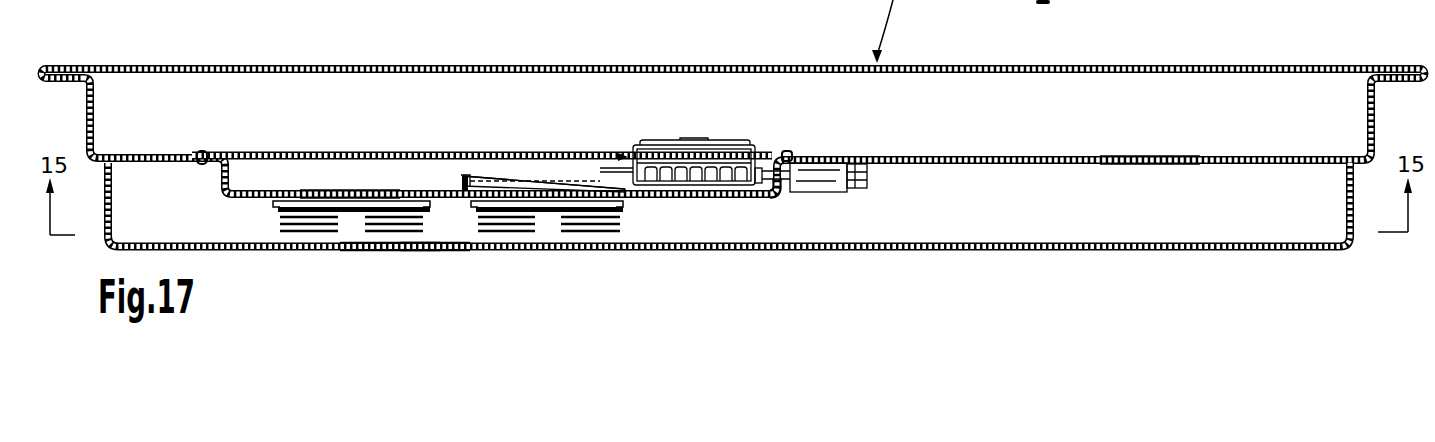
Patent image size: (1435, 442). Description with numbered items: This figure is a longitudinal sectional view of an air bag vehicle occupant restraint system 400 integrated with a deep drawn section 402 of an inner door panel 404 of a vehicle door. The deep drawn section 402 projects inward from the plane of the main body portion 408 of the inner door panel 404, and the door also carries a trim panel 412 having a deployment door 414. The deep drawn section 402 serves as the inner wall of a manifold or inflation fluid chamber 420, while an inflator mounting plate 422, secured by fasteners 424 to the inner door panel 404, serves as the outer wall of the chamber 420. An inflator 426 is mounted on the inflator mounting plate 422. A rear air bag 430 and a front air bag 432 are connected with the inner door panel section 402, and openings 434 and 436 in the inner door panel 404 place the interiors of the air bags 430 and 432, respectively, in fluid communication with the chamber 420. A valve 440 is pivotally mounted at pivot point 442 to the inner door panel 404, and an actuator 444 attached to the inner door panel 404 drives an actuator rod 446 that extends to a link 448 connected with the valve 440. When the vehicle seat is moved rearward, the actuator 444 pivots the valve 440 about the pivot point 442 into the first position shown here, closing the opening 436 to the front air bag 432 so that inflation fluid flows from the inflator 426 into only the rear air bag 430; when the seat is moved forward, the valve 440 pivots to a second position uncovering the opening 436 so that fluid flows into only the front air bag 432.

The air bag vehicle occupant restraint system 400 is at (430, 248).
The deep drawn section 402 is at (780, 210).
The inner door panel 404 is at (161, 140).
The main body portion 408 is at (1145, 164).
The trim panel 412 is at (1033, 260).
The deployment door 414 is at (390, 251).
The inflation fluid chamber 420 is at (483, 168).
The inflator mounting plate 422 is at (277, 140).
The fasteners 424 is at (202, 151).
The inflator 426 is at (714, 143).
The rear air bag 430 is at (283, 216).
The front air bag 432 is at (622, 230).
The opening 434 is at (348, 190).
The opening 436 is at (524, 192).
The valve 440 is at (575, 180).
The pivot point 442 is at (460, 181).
The actuator 444 is at (838, 188).
The actuator rod 446 is at (612, 178).
The link 448 is at (462, 178).